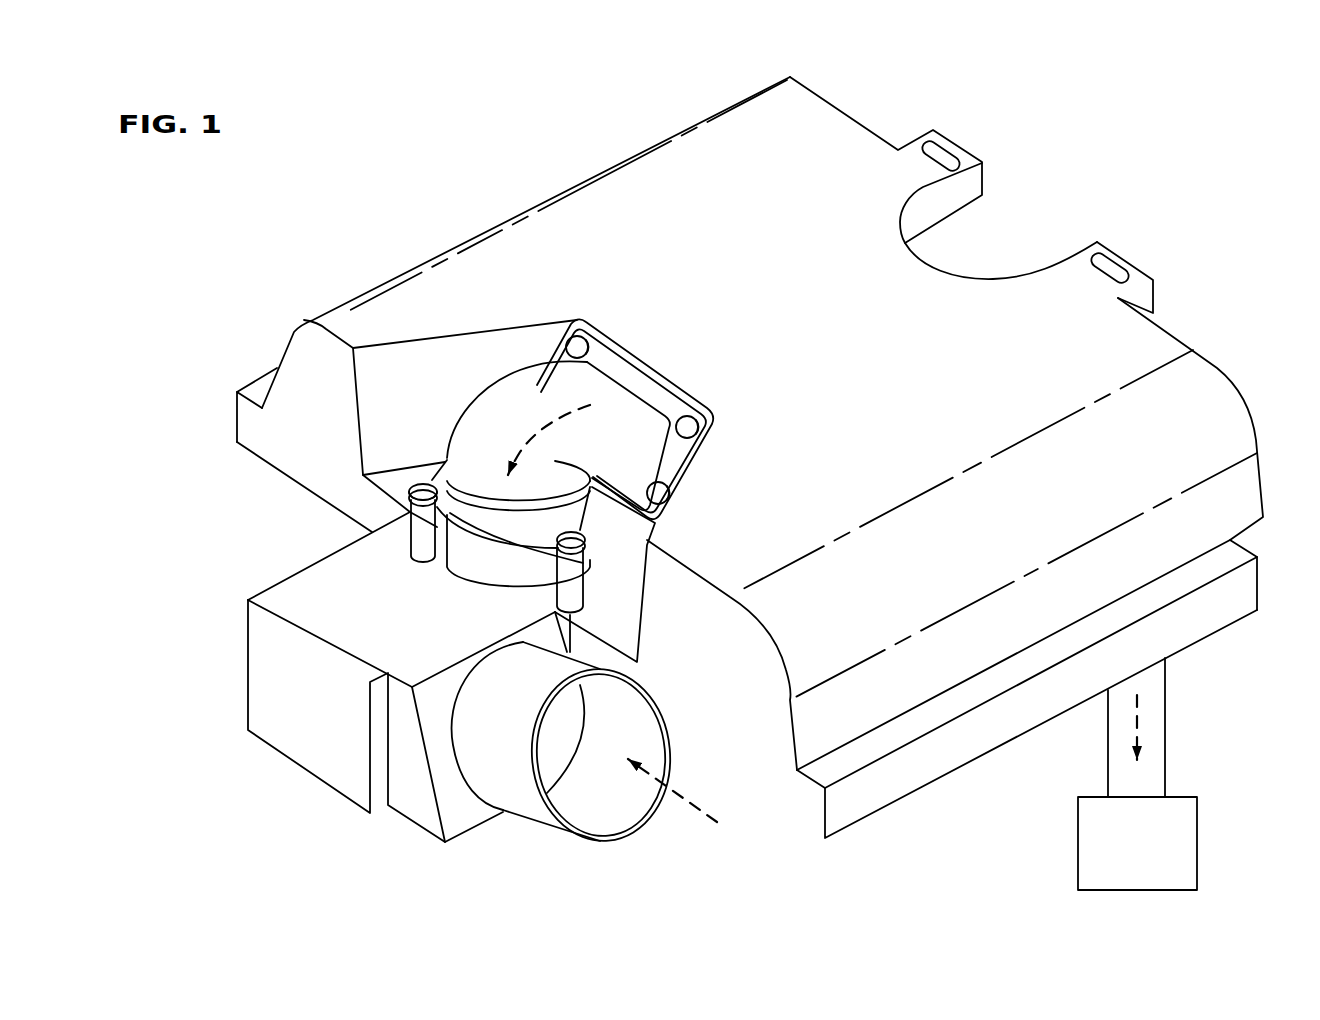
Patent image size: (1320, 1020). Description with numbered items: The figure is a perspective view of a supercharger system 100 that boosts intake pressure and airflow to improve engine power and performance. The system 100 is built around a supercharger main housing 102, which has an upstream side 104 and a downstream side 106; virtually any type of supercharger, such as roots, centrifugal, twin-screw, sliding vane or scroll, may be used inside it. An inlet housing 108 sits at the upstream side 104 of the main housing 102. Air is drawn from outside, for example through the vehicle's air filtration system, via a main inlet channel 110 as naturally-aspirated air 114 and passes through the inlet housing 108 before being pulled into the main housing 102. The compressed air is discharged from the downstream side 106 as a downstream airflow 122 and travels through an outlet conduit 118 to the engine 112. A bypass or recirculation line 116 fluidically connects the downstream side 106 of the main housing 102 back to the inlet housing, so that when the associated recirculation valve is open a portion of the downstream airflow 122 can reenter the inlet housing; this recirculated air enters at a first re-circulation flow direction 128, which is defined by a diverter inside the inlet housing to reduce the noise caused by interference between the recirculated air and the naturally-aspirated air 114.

The supercharger system 100 is at (1118, 134).
The supercharger main housing 102 is at (975, 391).
The upstream side 104 is at (300, 811).
The downstream side 106 is at (1192, 685).
The inlet housing 108 is at (263, 672).
The main inlet channel 110 is at (591, 800).
The engine 112 is at (1160, 854).
The naturally-aspirated air 114 is at (697, 805).
The recirculation line 116 is at (592, 382).
The outlet conduit 118 is at (1143, 772).
The downstream airflow 122 is at (1137, 718).
The first re-circulation flow direction 128 is at (553, 418).